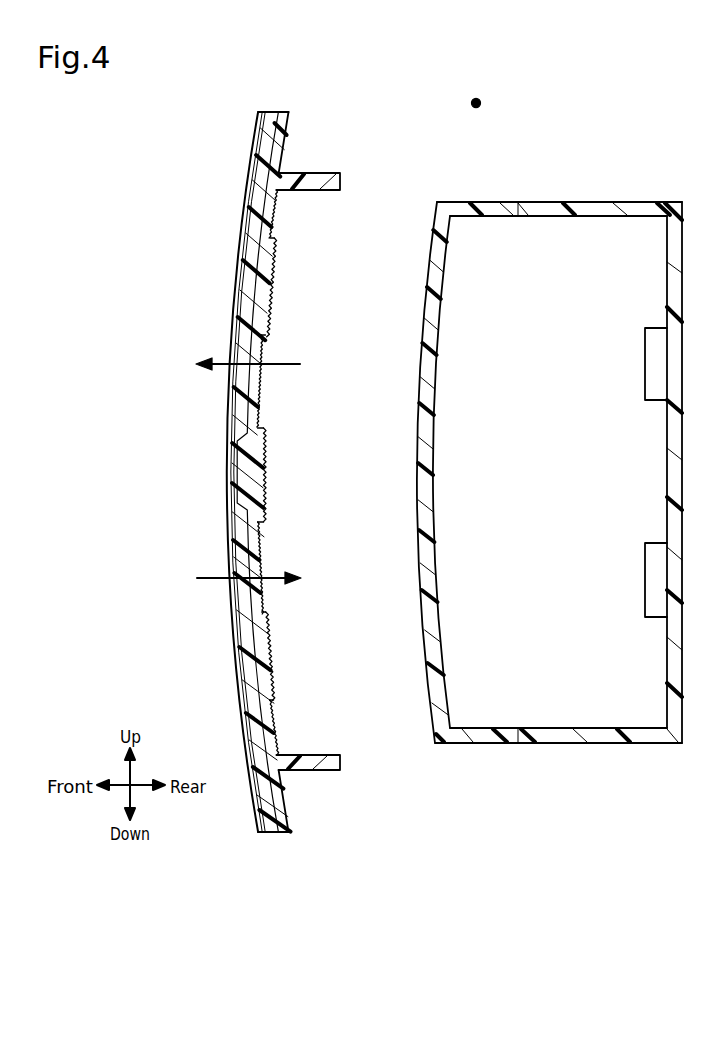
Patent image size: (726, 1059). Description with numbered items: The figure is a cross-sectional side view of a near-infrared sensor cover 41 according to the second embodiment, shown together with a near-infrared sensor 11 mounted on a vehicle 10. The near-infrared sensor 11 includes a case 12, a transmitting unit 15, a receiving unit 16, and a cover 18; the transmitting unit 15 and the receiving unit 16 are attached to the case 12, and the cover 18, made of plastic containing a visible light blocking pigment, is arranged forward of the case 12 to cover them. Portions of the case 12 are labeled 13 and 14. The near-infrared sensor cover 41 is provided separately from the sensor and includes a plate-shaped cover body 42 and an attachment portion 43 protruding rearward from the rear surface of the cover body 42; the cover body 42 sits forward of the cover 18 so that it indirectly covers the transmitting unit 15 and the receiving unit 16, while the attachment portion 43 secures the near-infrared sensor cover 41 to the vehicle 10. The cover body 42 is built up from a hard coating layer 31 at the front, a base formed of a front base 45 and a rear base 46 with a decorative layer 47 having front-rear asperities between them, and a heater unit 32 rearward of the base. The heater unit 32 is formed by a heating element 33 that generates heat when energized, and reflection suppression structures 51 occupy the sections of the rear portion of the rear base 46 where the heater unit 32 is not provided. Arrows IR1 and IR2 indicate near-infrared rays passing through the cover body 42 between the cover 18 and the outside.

The vehicle 10 is at (480, 101).
The near-infrared sensor 11 is at (608, 760).
The case 12 is at (703, 151).
The upper wall 13 is at (641, 210).
The rear wall 14 is at (673, 229).
The transmitting unit 15 is at (657, 360).
The receiving unit 16 is at (657, 576).
The cover 18 is at (486, 207).
The hard coating layer 31 is at (247, 190).
The heater unit 32 is at (290, 472).
The heating element 33 is at (273, 240).
The near-infrared sensor cover 41 is at (257, 463).
The cover body 42 is at (231, 130).
The attachment portion 43 is at (320, 180).
The front base 45 is at (255, 203).
The rear base 46 is at (260, 328).
The decorative layer 47 is at (263, 243).
The reflection suppression structures 51 is at (281, 215).
The infrared ray (outgoing) IR1 is at (281, 368).
The infrared ray (incoming) IR2 is at (276, 591).